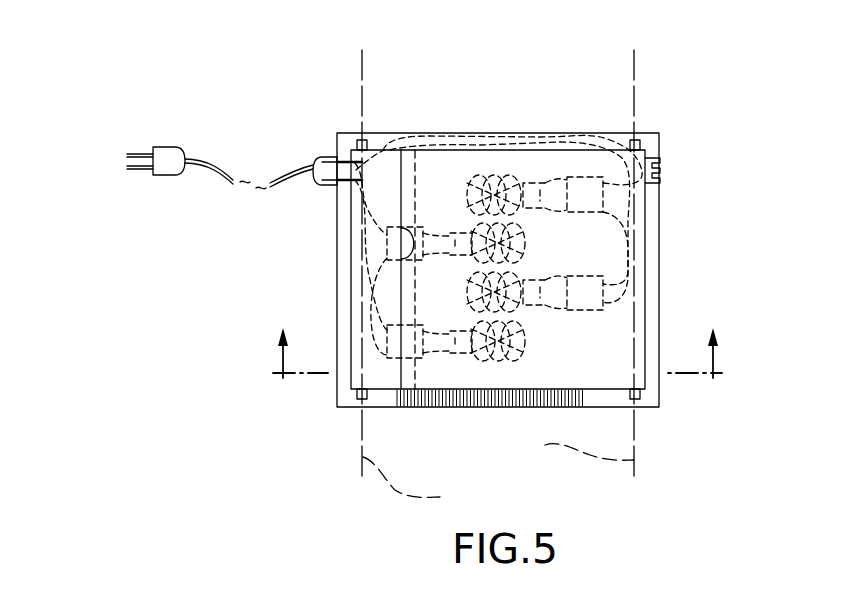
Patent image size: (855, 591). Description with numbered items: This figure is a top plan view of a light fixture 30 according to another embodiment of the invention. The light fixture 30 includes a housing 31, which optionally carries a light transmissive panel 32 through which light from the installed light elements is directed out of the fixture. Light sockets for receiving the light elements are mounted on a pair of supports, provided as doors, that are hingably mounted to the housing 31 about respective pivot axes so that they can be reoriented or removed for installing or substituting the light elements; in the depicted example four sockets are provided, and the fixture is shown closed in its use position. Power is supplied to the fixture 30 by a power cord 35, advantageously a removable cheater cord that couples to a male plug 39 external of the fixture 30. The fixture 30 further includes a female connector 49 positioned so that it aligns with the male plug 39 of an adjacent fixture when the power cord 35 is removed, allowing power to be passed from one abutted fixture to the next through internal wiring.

The light fixture 30 is at (302, 90).
The housing 31 is at (341, 397).
The light transmissive panel 32 is at (607, 333).
The power cord 35 is at (196, 160).
The male plug 39 is at (325, 187).
The female connector 49 is at (659, 172).